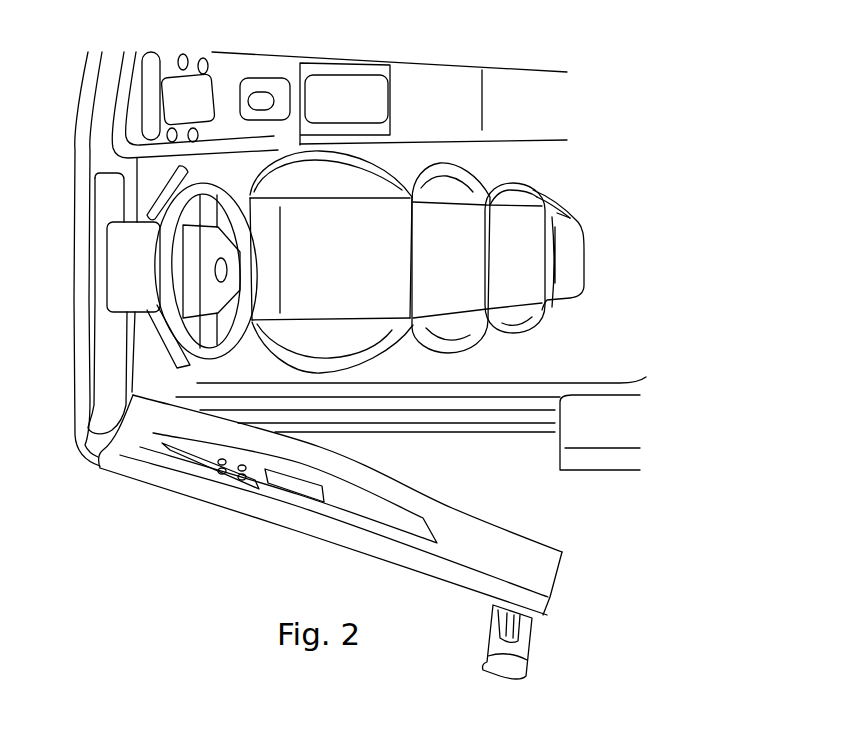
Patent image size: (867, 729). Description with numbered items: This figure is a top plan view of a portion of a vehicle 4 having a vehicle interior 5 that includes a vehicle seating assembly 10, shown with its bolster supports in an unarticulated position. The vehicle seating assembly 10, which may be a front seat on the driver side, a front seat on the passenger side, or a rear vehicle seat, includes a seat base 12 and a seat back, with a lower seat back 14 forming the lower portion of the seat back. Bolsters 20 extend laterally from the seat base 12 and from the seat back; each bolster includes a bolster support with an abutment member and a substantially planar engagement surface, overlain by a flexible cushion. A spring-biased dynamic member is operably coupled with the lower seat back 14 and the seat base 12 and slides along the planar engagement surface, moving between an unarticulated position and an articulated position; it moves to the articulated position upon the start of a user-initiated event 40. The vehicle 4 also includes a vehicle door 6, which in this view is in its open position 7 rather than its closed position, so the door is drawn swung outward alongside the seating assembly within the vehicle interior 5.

The vehicle 4 is at (633, 100).
The vehicle interior 5 is at (589, 185).
The vehicle door 6 is at (320, 538).
The open position 7 is at (580, 572).
The vehicle seating assembly 10 is at (597, 279).
The seat base 12 is at (323, 238).
The lower seat back 14 is at (450, 237).
The bolsters 20 is at (335, 180).
The user-initiated event 40 is at (548, 640).